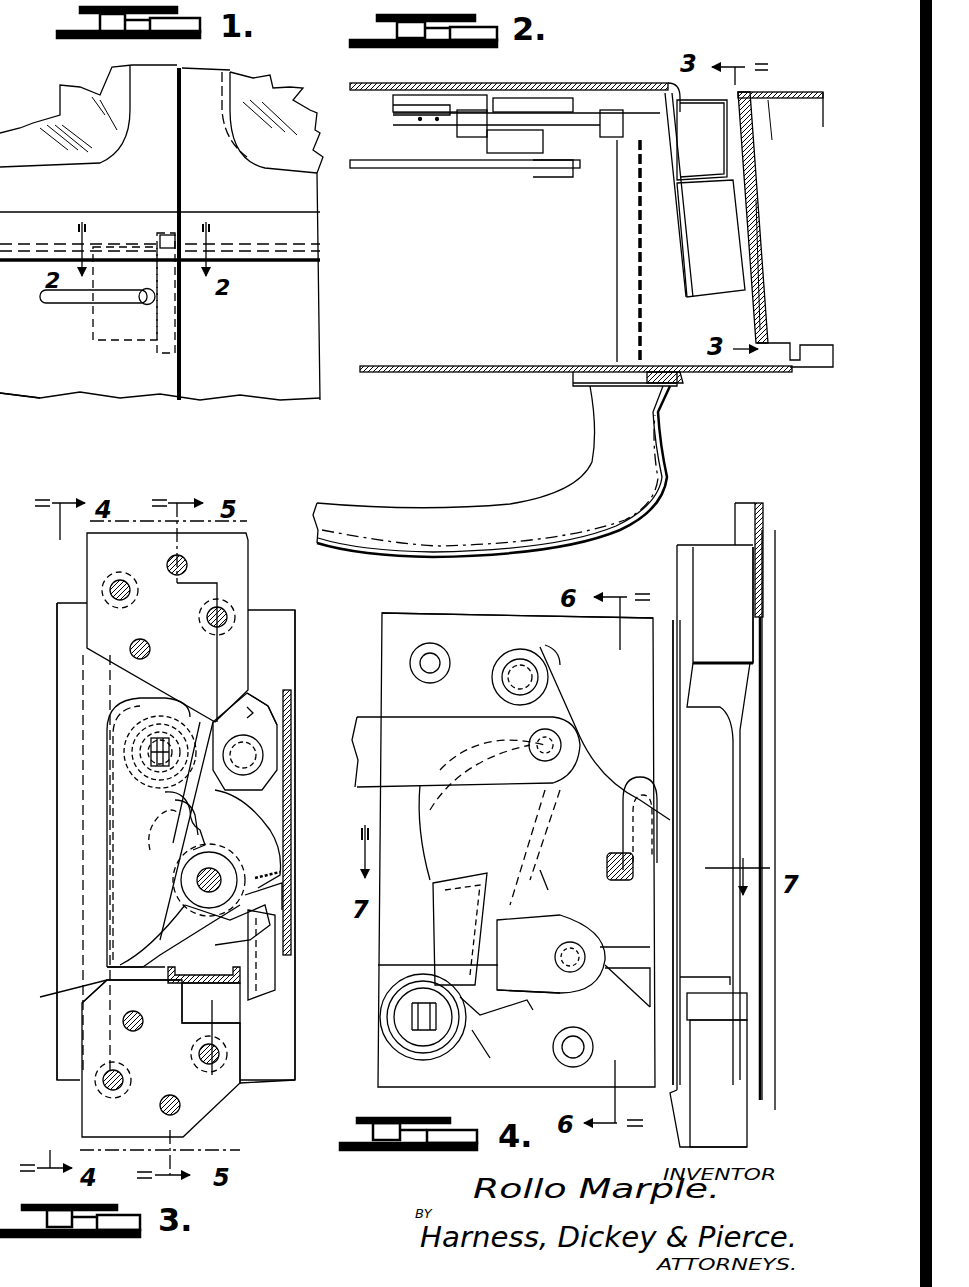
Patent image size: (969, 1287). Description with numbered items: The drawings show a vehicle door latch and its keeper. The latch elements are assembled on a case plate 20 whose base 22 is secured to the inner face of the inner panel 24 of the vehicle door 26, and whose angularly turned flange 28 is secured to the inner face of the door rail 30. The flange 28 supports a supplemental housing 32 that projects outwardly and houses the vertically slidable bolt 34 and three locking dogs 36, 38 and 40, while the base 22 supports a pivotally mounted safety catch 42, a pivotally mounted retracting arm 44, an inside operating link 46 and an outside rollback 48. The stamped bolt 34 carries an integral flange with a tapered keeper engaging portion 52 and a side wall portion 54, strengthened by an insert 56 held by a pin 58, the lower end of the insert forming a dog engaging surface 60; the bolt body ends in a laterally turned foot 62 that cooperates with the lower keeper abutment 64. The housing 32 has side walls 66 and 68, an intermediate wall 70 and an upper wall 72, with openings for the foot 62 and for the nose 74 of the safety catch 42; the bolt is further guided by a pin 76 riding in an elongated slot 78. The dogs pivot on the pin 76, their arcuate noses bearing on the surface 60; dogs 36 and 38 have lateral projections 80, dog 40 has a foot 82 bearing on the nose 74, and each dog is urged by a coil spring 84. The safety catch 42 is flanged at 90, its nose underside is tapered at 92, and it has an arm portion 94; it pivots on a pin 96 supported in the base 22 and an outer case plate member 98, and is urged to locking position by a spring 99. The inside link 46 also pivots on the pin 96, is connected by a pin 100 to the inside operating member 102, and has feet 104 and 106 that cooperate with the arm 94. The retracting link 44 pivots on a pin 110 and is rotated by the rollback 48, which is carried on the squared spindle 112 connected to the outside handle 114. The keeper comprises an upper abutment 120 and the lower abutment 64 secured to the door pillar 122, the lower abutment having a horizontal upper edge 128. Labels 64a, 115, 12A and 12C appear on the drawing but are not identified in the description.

In FIG. 2, the case plate 20 is at (612, 103).
In FIG. 3, the case plate 20 is at (283, 1015).
In FIG. 4, the case plate 20 is at (468, 630).
In FIG. 2, the base 22 is at (592, 75).
In FIG. 4, the base 22 is at (540, 1073).
In FIG. 2, the inner panel 24 is at (388, 84).
In FIG. 1, the vehicle door 26 is at (60, 378).
In FIG. 2, the vehicle door 26 is at (415, 366).
In FIG. 2, the flange 28 is at (640, 222).
In FIG. 3, the flange 28 is at (265, 1075).
In FIG. 4, the flange 28 is at (680, 660).
In FIG. 2, the door rail 30 is at (650, 347).
In FIG. 2, the supplemental housing 32 is at (723, 245).
In FIG. 3, the supplemental housing 32 is at (125, 796).
In FIG. 4, the supplemental housing 32 is at (705, 804).
In FIG. 2, the bolt 34 is at (713, 150).
In FIG. 3, the bolt 34 is at (258, 728).
In FIG. 3, the locking dog 36 is at (292, 830).
In FIG. 3, the locking dog 38 is at (290, 805).
In FIG. 3, the locking dog 40 is at (175, 795).
In FIG. 3, the safety catch member 42 is at (280, 918).
In FIG. 4, the safety catch member 42 is at (552, 992).
In FIG. 4, the retracting arm 44 is at (563, 687).
In FIG. 2, the inside operating link 46 is at (510, 160).
In FIG. 4, the inside operating link 46 is at (470, 797).
In FIG. 4, the outside rollback element 48 is at (598, 900).
In FIG. 3, the tapered keeper engaging portion 52 is at (245, 710).
In FIG. 3, the side wall portion 54 is at (270, 758).
In FIG. 3, the insert 56 is at (268, 735).
In FIG. 3, the pin 58 is at (262, 752).
In FIG. 3, the dog engaging surface 60 is at (232, 718).
In FIG. 3, the foot 62 is at (120, 965).
In FIG. 3, the lower keeper abutment 64 is at (100, 1015).
In FIG. 4, the lower keeper abutment 64 is at (735, 1070).
In FIG. 3, the lower plate flange 64a is at (90, 990).
In FIG. 4, the lower plate flange 64a is at (735, 1005).
In FIG. 3, the side wall 66 is at (105, 850).
In FIG. 3, the side wall 68 is at (275, 855).
In FIG. 3, the intermediate wall 70 is at (205, 715).
In FIG. 3, the wall 72 is at (125, 690).
In FIG. 3, the nose 74 is at (262, 960).
In FIG. 3, the pin 76 is at (210, 880).
In FIG. 4, the pin 76 is at (735, 988).
In FIG. 3, the elongated slot 78 is at (206, 817).
In FIG. 3, the lateral projection 80 is at (278, 882).
In FIG. 3, the laterally turned foot 82 is at (285, 893).
In FIG. 3, the coil spring 84 is at (160, 828).
In FIG. 4, the flange 90 is at (599, 1047).
In FIG. 3, the tapered underside 92 is at (265, 1003).
In FIG. 4, the arm portion 94 is at (570, 805).
In FIG. 4, the supporting pin 96 is at (607, 990).
In FIG. 4, the outer case plate member 98 is at (458, 904).
In FIG. 4, the spring 99 is at (485, 1022).
In FIG. 4, the pin 100 is at (553, 743).
In FIG. 2, the inside operating member 102 is at (470, 168).
In FIG. 4, the inside operating member 102 is at (418, 723).
In FIG. 4, the foot 104 is at (546, 905).
In FIG. 4, the foot 106 is at (470, 832).
In FIG. 4, the pin 110 is at (532, 665).
In FIG. 4, the squared spindle 112 is at (660, 852).
In FIG. 1, the outside handle 114 is at (118, 305).
In FIG. 2, the outside handle 114 is at (647, 442).
In FIG. 4, the lug 115 is at (548, 877).
In FIG. 3, the upper keeper abutment 120 is at (232, 580).
In FIG. 4, the upper keeper abutment 120 is at (727, 602).
In FIG. 2, the door pillar 122 is at (775, 320).
In FIG. 4, the door pillar 122 is at (768, 662).
In FIG. 3, the horizontal upper edge 128 is at (150, 990).
In FIG. 3, the plate step 12A is at (228, 690).
In FIG. 3, the mounting hole 12C is at (148, 665).